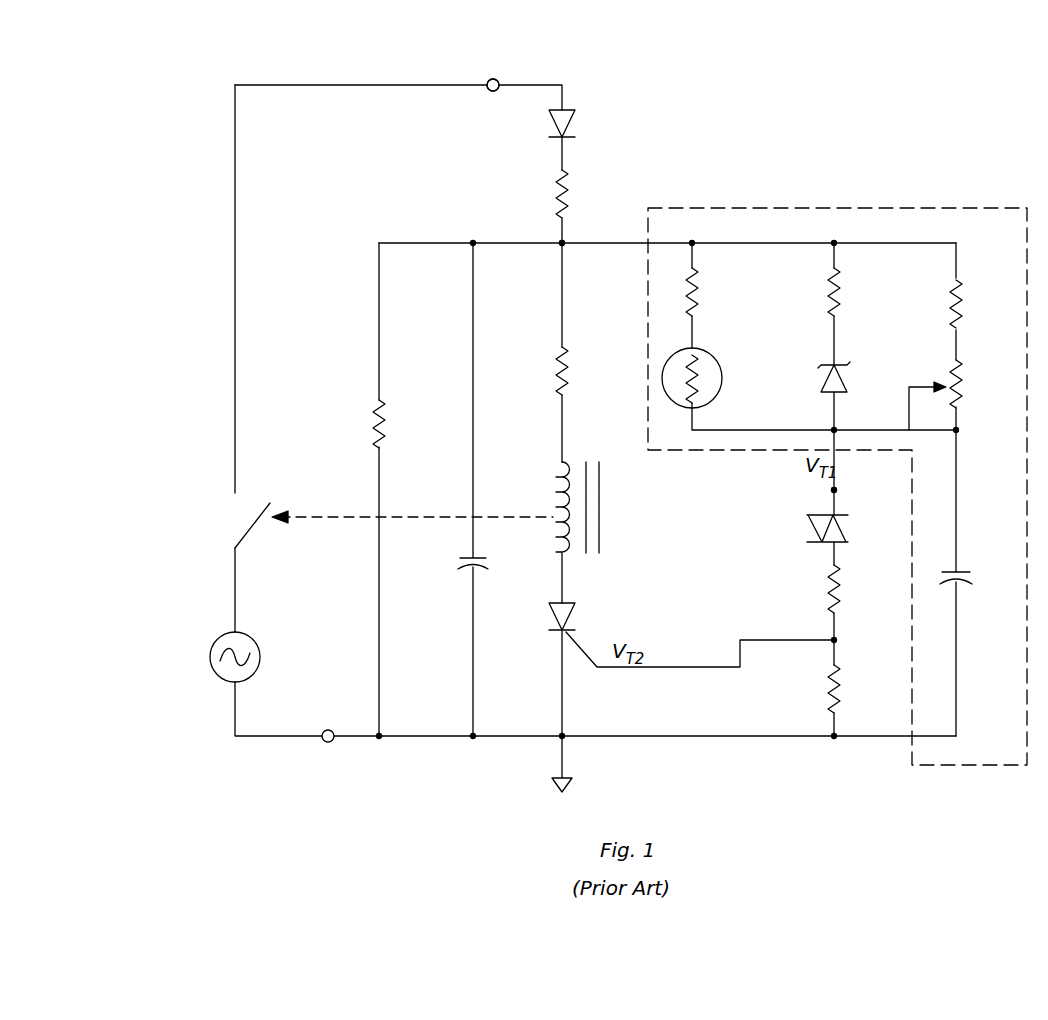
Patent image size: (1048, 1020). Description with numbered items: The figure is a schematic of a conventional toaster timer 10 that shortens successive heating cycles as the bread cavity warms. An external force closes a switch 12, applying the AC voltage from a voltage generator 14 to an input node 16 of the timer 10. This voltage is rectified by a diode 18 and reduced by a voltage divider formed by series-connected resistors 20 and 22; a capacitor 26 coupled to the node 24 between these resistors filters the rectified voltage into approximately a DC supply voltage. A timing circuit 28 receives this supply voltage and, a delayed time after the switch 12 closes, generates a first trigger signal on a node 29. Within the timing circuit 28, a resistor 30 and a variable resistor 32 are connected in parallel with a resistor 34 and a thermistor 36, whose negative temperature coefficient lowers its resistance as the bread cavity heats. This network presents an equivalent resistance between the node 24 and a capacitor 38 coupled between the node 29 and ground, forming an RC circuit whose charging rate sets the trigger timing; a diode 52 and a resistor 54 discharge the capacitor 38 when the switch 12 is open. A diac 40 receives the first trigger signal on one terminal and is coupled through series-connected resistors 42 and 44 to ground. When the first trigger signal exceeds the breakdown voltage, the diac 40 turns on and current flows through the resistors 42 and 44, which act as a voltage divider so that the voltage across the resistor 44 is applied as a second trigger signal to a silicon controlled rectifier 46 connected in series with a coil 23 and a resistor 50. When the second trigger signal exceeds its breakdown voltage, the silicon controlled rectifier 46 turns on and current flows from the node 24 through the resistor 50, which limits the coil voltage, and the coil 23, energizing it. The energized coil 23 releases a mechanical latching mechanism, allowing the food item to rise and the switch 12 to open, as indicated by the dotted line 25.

The timer 10 is at (900, 105).
The switch 12 is at (224, 518).
The voltage generator 14 is at (208, 653).
The input node 16 is at (498, 79).
The diode 18 is at (578, 116).
The resistor 20 is at (570, 190).
The resistor 22 is at (372, 424).
The coil 23 is at (565, 462).
The node 24 is at (560, 241).
The dotted line 25 is at (315, 513).
The capacitor 26 is at (462, 557).
The timing circuit 28 is at (826, 204).
The node 29 is at (838, 490).
The resistor 30 is at (966, 298).
The variable resistor 32 is at (966, 378).
The resistor 34 is at (698, 292).
The thermistor 36 is at (710, 357).
The capacitor 38 is at (966, 573).
The diac 40 is at (806, 526).
The resistor 42 is at (826, 590).
The resistor 44 is at (826, 690).
The silicon controlled rectifier 46 is at (575, 610).
The resistor 50 is at (570, 358).
The diode 52 is at (840, 364).
The resistor 54 is at (842, 292).